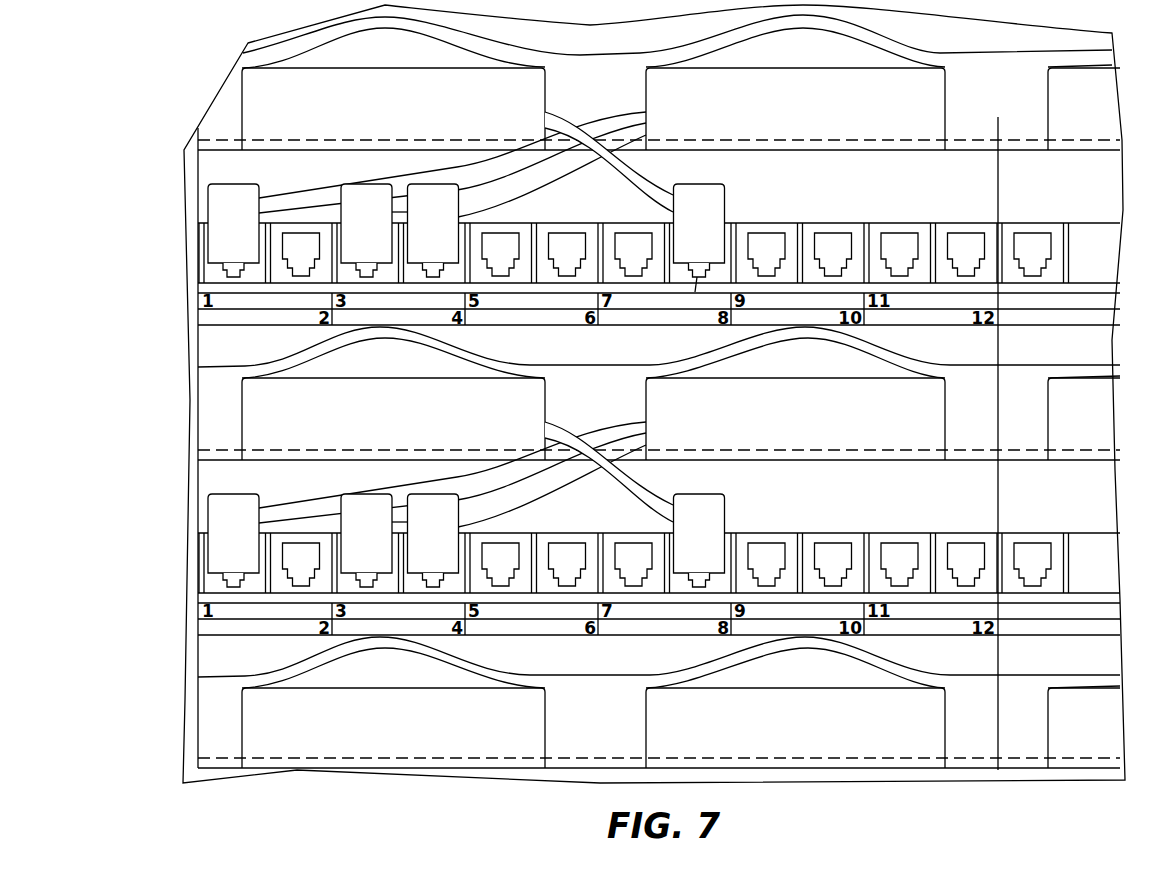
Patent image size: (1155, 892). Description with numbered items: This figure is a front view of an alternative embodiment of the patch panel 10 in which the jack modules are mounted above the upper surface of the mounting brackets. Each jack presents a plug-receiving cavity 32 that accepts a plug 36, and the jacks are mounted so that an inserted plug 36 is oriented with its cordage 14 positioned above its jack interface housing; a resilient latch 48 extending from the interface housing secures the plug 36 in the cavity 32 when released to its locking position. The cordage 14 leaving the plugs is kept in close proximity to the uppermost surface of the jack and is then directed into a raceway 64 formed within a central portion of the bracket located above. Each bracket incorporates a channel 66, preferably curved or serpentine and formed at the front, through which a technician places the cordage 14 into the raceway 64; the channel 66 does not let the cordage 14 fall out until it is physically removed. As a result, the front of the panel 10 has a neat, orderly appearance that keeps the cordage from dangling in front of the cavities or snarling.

The patch panel 10 is at (176, 68).
The cordage 14 is at (637, 497).
The plug-receiving cavity 32 is at (885, 238).
The plug 36 is at (710, 203).
The resilient latch 48 is at (695, 292).
The raceway 64 is at (598, 716).
The channel 66 is at (441, 340).